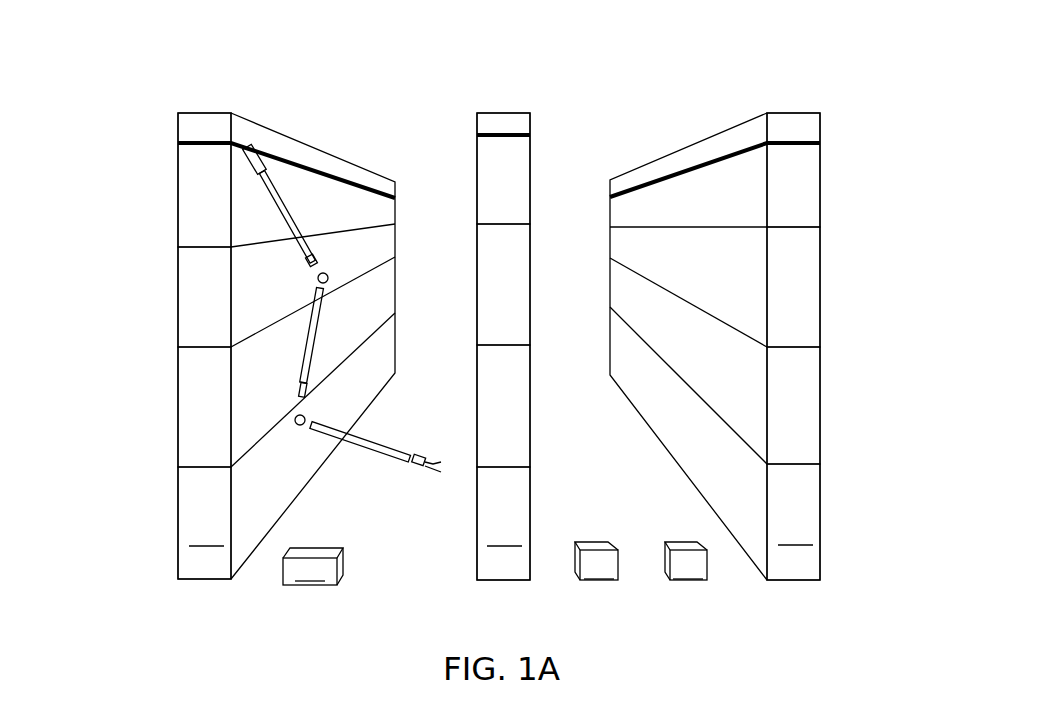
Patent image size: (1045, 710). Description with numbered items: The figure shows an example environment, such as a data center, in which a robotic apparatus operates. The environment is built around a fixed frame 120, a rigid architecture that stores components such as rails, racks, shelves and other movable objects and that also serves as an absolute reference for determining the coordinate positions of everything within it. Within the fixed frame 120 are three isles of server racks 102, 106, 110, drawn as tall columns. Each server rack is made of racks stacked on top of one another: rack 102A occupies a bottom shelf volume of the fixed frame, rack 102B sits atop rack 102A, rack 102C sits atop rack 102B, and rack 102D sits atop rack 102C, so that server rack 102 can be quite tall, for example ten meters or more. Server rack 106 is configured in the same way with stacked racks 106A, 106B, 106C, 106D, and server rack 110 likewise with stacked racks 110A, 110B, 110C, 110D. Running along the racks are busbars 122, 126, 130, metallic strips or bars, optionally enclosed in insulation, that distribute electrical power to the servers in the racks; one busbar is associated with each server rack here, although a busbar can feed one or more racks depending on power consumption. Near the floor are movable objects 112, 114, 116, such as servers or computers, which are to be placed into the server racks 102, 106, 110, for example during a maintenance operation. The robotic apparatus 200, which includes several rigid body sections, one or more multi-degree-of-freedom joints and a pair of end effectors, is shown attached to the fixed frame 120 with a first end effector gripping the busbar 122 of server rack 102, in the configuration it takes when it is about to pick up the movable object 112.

The fixed frame 120 is at (474, 306).
The server rack 102 is at (235, 346).
The rack 102A is at (153, 523).
The rack 102B is at (153, 407).
The rack 102C is at (153, 297).
The rack 102D is at (153, 180).
The busbar 122 is at (241, 156).
The server rack 106 is at (510, 341).
The rack 106A is at (556, 523).
The rack 106B is at (556, 406).
The rack 106C is at (556, 284).
The rack 106D is at (556, 168).
The busbar 126 is at (457, 119).
The server rack 110 is at (768, 346).
The rack 110A is at (846, 522).
The rack 110B is at (846, 405).
The rack 110C is at (846, 287).
The rack 110D is at (846, 170).
The busbar 130 is at (766, 158).
The movable object 112 is at (313, 566).
The movable object 114 is at (596, 561).
The movable object 116 is at (686, 561).
The robotic apparatus 200 is at (357, 308).